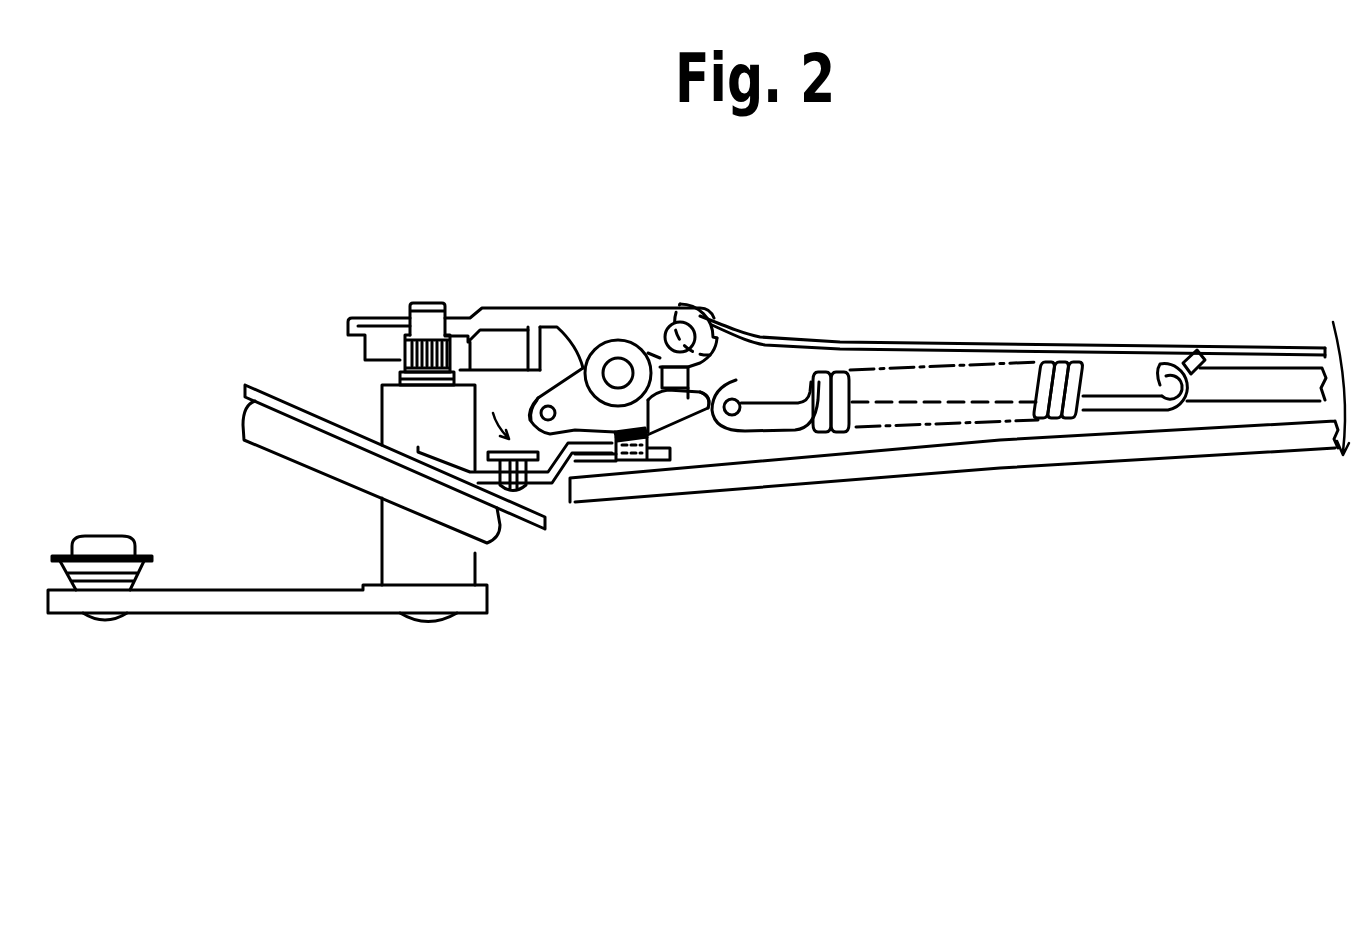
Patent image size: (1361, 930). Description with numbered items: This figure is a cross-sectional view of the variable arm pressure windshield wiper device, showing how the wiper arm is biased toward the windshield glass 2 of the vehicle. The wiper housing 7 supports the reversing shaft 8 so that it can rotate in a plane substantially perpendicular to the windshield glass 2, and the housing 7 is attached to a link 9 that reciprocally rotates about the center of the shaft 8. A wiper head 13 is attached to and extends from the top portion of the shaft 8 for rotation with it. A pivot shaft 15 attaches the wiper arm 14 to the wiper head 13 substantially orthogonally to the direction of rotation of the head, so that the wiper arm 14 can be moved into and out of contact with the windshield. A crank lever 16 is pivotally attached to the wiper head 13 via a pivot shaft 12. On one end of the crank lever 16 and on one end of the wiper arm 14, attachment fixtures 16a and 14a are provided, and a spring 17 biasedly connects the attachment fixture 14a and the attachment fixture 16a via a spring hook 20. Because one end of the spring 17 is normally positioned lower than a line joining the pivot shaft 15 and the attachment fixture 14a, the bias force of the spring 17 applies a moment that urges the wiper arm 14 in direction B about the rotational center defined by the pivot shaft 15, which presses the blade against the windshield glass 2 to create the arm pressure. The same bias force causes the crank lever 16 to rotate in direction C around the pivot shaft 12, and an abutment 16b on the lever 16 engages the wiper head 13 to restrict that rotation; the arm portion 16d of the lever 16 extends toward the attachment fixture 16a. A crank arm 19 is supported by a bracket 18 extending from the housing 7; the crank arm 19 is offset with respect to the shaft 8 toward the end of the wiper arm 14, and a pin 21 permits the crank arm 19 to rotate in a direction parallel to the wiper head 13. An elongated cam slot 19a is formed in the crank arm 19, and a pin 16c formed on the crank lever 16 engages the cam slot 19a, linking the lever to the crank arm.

The windshield glass 2 is at (962, 473).
The wiper housing 7 is at (288, 423).
The reversing shaft 8 is at (430, 310).
The link 9 is at (282, 612).
The pivot shaft 12 is at (618, 373).
The wiper head 13 is at (577, 330).
The wiper arm 14 is at (940, 344).
The attachment fixture 14a is at (1220, 355).
The pivot shaft 15 is at (680, 337).
The crank lever 16 is at (583, 366).
The attachment fixture 16a is at (548, 406).
The abutment 16b is at (660, 398).
The pin 16c is at (624, 441).
The lever arm portion 16d is at (540, 442).
The spring 17 is at (1129, 410).
The bracket 18 is at (543, 497).
The crank arm 19 is at (650, 460).
The cam slot 19a is at (632, 461).
The spring hook 20 is at (693, 400).
The pin 21 is at (520, 488).
The direction B is at (1331, 365).
The direction C is at (494, 404).